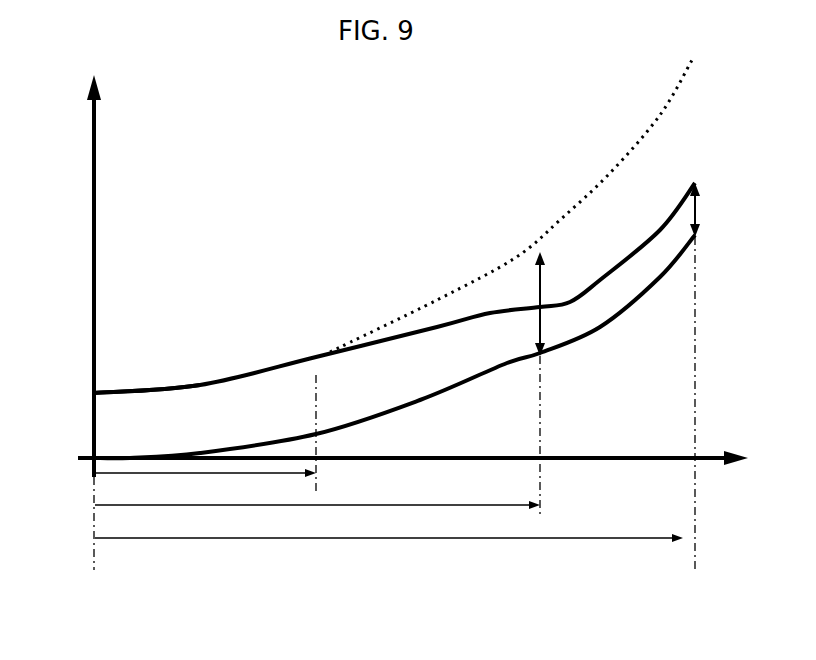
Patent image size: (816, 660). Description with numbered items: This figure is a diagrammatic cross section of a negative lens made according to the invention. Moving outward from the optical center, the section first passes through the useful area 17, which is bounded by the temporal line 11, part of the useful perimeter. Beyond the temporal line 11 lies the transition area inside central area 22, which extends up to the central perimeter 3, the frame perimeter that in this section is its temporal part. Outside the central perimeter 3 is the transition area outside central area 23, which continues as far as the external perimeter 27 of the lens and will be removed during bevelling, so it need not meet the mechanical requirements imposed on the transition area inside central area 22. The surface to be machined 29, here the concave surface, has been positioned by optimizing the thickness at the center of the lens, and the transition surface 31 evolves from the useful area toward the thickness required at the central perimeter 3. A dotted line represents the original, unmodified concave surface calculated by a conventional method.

The useful area 17 is at (197, 385).
The temporal line 11 is at (318, 357).
The transition area inside central area 22 is at (437, 327).
The central perimeter 3 is at (540, 305).
The transition area outside central area 23 is at (625, 262).
The external perimeter 27 is at (695, 183).
The surface to be machined 29 is at (147, 378).
The transition surface 31 is at (595, 287).